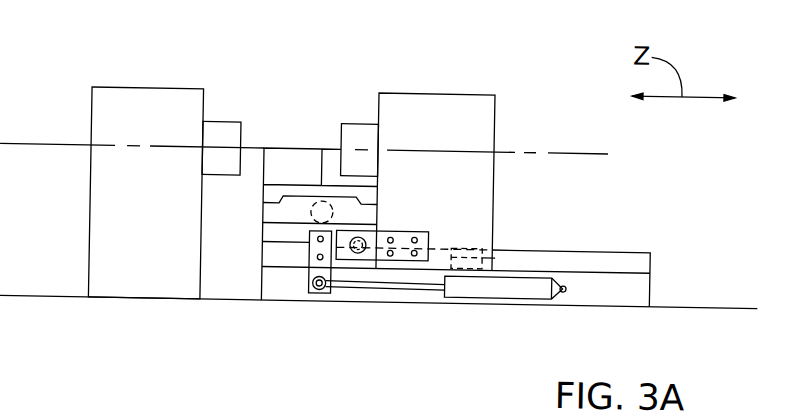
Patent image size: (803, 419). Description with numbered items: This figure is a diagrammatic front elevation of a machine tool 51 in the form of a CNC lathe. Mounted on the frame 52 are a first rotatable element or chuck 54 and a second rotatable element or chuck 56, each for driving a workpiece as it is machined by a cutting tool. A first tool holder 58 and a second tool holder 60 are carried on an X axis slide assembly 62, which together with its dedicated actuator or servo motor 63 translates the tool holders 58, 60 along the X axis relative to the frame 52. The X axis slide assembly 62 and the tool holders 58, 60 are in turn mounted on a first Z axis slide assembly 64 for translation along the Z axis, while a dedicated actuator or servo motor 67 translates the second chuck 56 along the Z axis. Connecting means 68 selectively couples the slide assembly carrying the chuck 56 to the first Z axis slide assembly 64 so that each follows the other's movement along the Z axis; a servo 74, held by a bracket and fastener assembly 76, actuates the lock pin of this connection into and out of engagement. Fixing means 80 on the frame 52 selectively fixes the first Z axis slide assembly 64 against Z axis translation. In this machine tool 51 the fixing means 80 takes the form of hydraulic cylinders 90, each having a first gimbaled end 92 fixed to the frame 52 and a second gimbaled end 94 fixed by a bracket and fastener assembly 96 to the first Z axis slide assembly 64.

The machine tool 51 is at (512, 72).
The frame 52 is at (130, 303).
The first rotatable element or chuck 54 is at (220, 128).
The second rotatable element or chuck 56 is at (358, 126).
The first tool holder 58 is at (297, 152).
The second tool holder 60 is at (329, 153).
The X axis slide assembly 62 is at (263, 222).
The dedicated actuator or servo motor 63 is at (335, 213).
The first Z axis slide assembly 64 is at (264, 258).
The dedicated actuator or servo motor 67 is at (492, 258).
The connecting means 68 is at (406, 226).
The servo 74 is at (367, 253).
The bracket and fastener assembly 76 is at (438, 233).
The fixing means 80 is at (440, 294).
The hydraulic cylinder 90 is at (498, 291).
The first gimbaled end 92 is at (568, 287).
The second gimbaled end 94 is at (319, 290).
The bracket and fastener assembly 96 is at (311, 281).